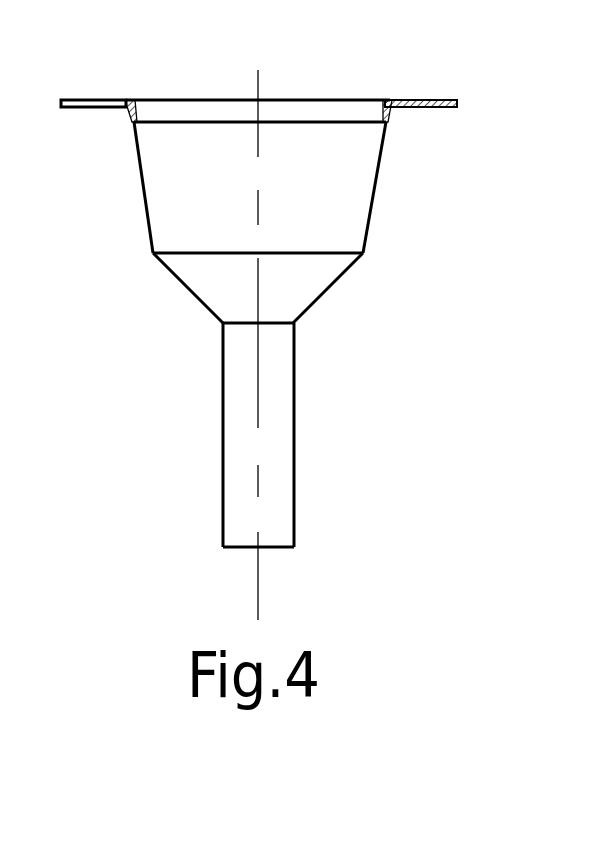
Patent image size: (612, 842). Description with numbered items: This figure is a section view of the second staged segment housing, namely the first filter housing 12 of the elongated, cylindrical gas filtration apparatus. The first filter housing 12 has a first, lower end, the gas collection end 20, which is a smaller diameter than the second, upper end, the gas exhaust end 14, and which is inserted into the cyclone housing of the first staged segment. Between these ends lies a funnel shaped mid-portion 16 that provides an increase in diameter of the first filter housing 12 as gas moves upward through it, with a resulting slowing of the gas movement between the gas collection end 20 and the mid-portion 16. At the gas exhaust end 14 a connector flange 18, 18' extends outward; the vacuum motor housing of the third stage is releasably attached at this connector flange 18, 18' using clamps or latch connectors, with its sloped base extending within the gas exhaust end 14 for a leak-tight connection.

The first filter housing 12 is at (375, 200).
The gas exhaust end 14 is at (165, 84).
The funnel shaped mid-portion 16 is at (288, 277).
The connector flange 18 is at (91, 129).
The connector flange 18' is at (437, 76).
The gas collection end 20 is at (236, 548).